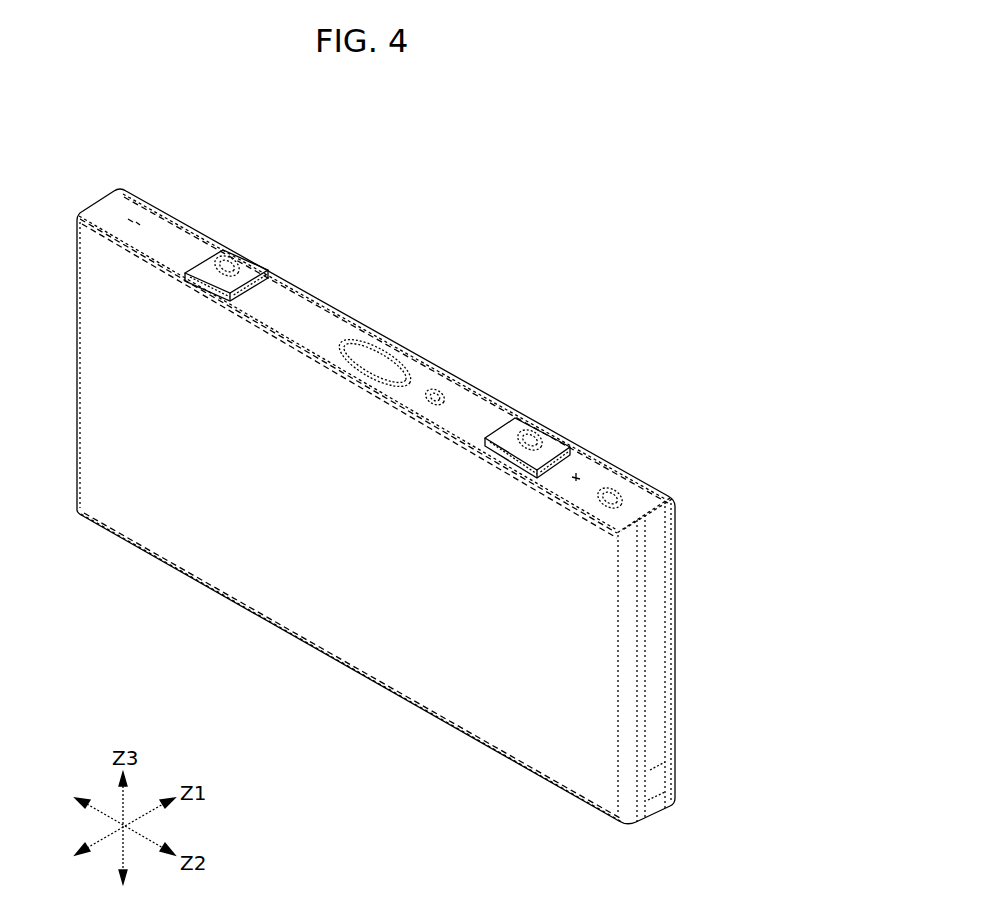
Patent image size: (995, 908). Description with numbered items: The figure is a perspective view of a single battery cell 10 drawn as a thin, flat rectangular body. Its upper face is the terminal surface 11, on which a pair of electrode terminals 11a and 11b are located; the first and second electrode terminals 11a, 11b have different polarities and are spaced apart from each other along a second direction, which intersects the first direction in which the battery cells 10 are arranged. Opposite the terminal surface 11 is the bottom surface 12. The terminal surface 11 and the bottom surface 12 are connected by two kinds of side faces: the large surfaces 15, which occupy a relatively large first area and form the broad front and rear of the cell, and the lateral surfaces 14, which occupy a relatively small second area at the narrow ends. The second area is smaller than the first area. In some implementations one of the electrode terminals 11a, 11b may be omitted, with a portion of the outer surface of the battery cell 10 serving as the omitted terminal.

The battery cell 10 is at (413, 320).
The terminal surface 11 is at (575, 468).
The first electrode terminal 11a is at (533, 428).
The second electrode terminal 11b is at (225, 250).
The bottom surface 12 is at (415, 708).
The lateral surface 14 is at (657, 698).
The large surface 15 is at (635, 478).